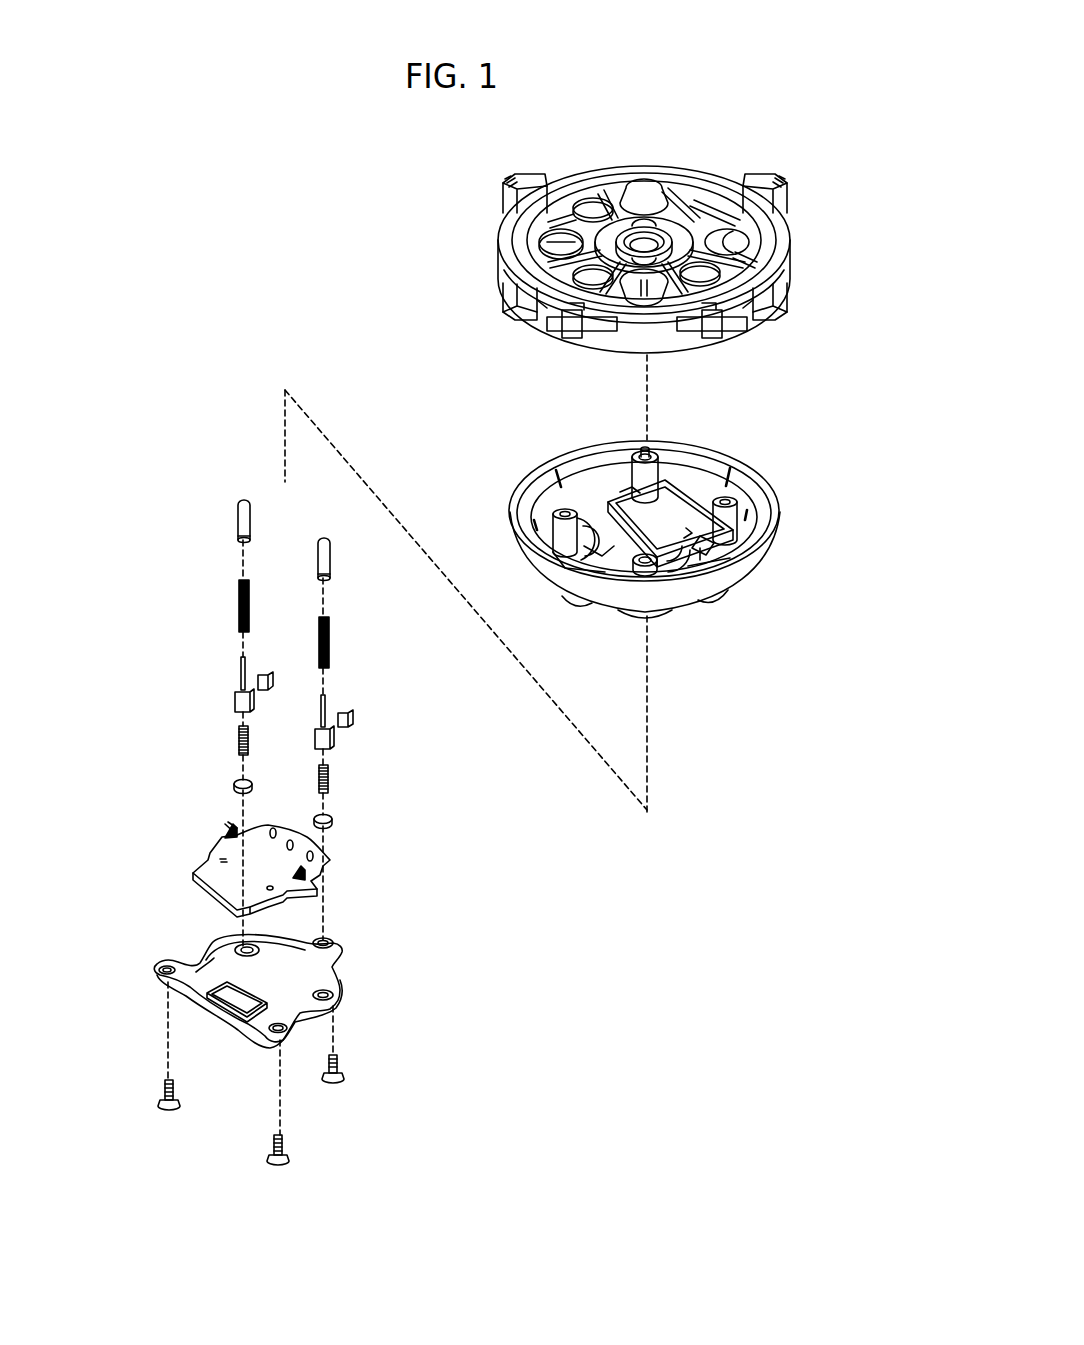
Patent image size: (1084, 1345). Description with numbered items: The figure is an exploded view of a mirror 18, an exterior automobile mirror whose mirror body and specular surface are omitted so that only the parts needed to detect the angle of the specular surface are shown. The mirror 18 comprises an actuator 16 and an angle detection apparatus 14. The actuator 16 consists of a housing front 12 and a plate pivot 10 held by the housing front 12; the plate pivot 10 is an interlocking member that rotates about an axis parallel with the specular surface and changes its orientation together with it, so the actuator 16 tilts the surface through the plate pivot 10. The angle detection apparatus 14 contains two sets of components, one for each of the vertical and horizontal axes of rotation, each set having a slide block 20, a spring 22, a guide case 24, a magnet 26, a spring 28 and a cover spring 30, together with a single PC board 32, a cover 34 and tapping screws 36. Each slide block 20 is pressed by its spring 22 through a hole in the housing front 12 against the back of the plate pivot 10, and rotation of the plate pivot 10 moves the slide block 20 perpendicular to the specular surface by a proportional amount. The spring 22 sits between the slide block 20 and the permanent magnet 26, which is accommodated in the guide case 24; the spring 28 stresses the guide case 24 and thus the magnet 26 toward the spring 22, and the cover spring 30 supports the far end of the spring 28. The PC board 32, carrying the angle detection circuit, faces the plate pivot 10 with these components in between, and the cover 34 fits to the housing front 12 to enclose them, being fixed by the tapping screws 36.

The plate pivot 10 is at (680, 352).
The housing front 12 is at (690, 622).
The angle detection apparatus 14 is at (397, 1177).
The actuator 16 is at (788, 837).
The mirror 18 is at (849, 153).
The slide block 20 is at (318, 556).
The spring 22 is at (250, 600).
The guide case 24 is at (318, 732).
The magnet 26 is at (273, 683).
The spring 28 is at (249, 738).
The cover spring 30 is at (252, 785).
The PC board 32 is at (322, 858).
The cover 34 is at (340, 965).
The tapping screw 36 is at (174, 1092).